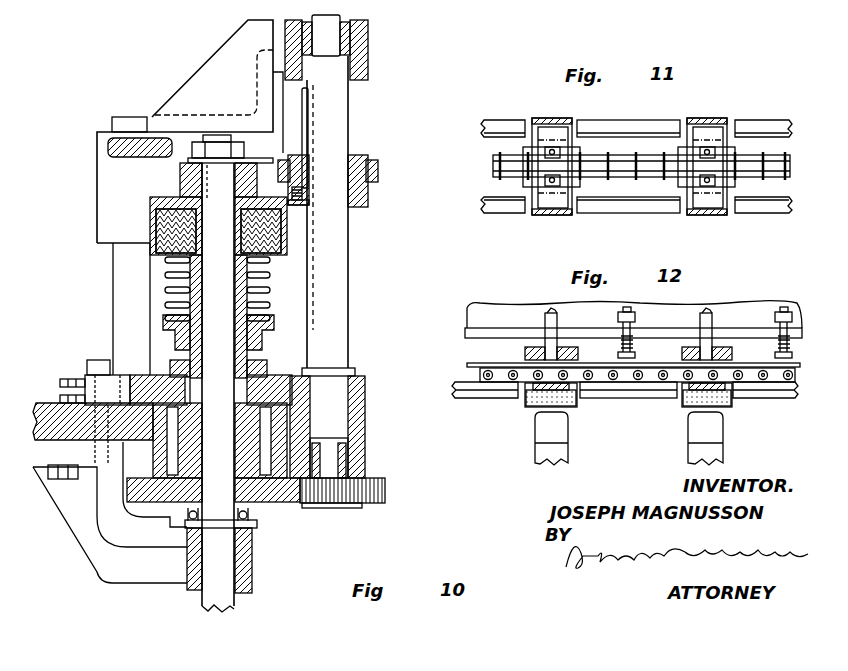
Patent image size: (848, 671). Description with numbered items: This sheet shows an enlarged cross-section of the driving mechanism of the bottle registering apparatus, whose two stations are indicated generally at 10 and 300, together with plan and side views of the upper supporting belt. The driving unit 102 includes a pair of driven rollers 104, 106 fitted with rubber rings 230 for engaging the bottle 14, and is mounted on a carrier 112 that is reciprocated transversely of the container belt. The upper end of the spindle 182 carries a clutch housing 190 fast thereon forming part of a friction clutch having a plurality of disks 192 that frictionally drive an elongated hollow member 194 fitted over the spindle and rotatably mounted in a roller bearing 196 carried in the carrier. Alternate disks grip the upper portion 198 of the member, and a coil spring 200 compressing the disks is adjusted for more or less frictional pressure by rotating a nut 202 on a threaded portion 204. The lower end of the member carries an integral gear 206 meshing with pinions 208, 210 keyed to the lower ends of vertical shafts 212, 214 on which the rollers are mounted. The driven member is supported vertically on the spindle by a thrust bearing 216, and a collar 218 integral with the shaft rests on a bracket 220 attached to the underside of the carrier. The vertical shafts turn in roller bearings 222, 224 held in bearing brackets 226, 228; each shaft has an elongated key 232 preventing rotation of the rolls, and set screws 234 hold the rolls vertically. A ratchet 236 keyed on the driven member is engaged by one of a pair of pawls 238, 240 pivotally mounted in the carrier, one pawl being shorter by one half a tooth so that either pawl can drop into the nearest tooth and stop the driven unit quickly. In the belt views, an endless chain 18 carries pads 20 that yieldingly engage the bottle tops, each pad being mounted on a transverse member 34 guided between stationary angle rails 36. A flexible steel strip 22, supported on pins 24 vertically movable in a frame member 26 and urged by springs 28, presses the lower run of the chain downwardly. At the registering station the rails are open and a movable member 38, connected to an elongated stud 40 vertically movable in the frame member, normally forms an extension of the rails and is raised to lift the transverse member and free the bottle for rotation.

In FIG. 10, the driving unit 102 is at (94, 102).
In FIG. 10, the driven roller 104 is at (370, 200).
In FIG. 10, the driven roller 106 is at (365, 211).
In FIG. 10, the carrier 112 is at (47, 440).
In FIG. 10, the spindle 182 is at (252, 563).
In FIG. 10, the clutch housing 190 is at (151, 203).
In FIG. 10, the disks 192 is at (164, 263).
In FIG. 10, the elongated hollow member 194 is at (164, 299).
In FIG. 10, the roller bearing 196 is at (167, 454).
In FIG. 10, the upper portion of the member 198 is at (164, 278).
In FIG. 10, the coil spring 200 is at (268, 281).
In FIG. 10, the nut 202 is at (266, 341).
In FIG. 10, the threaded portion 204 is at (272, 302).
In FIG. 10, the gear 206 is at (135, 498).
In FIG. 10, the pinion 208 is at (387, 494).
In FIG. 10, the pinion 210 is at (376, 504).
In FIG. 10, the vertical shaft 212 is at (341, 122).
In FIG. 10, the vertical shaft 214 is at (373, 207).
In FIG. 10, the thrust bearing 216 is at (253, 516).
In FIG. 10, the collar 218 is at (258, 526).
In FIG. 10, the bracket 220 is at (253, 580).
In FIG. 10, the roller bearing 222 is at (369, 29).
In FIG. 10, the roller bearing 224 is at (354, 463).
In FIG. 10, the bearing bracket 226 is at (369, 57).
In FIG. 10, the bearing bracket 228 is at (365, 418).
In FIG. 10, the rubber rings 230 is at (379, 165).
In FIG. 10, the elongated key 232 is at (303, 116).
In FIG. 10, the set screws 234 is at (296, 201).
In FIG. 10, the ratchet 236 is at (286, 378).
In FIG. 10, the pawl 238 is at (105, 360).
In FIG. 10, the pawl 240 is at (87, 398).
In FIG. 12, the registering apparatus station 10 is at (518, 443).
In FIG. 12, the bottle 14 is at (688, 458).
In FIG. 11, the endless chain 18 is at (628, 178).
In FIG. 12, the endless chain 18 is at (630, 378).
In FIG. 12, the pad 20 is at (533, 407).
In FIG. 12, the flexible steel strip 22 is at (468, 365).
In FIG. 12, the pins 24 is at (617, 320).
In FIG. 12, the frame member 26 is at (468, 328).
In FIG. 12, the springs 28 is at (635, 348).
In FIG. 11, the transverse member 34 is at (547, 130).
In FIG. 11, the angle rails 36 is at (492, 128).
In FIG. 12, the angle rails 36 is at (472, 396).
In FIG. 11, the movable member 38 is at (565, 120).
In FIG. 12, the movable member 38 is at (525, 350).
In FIG. 12, the elongated stud 40 is at (548, 322).
In FIG. 12, the registering apparatus station 300 is at (738, 419).